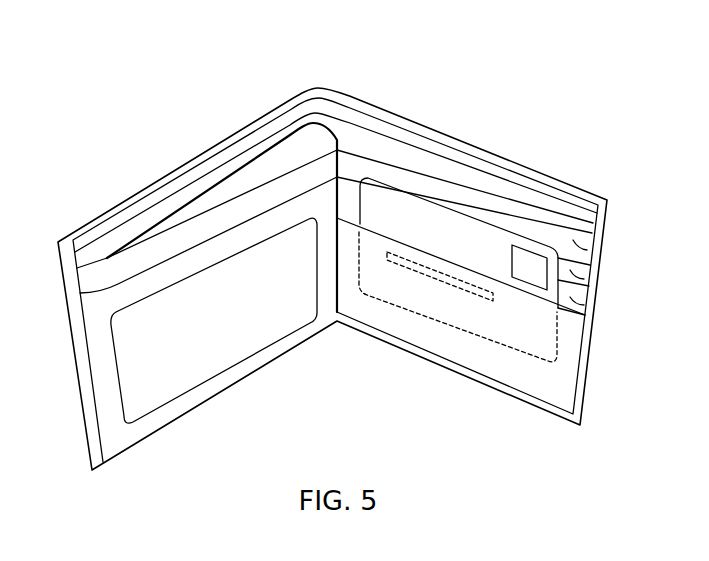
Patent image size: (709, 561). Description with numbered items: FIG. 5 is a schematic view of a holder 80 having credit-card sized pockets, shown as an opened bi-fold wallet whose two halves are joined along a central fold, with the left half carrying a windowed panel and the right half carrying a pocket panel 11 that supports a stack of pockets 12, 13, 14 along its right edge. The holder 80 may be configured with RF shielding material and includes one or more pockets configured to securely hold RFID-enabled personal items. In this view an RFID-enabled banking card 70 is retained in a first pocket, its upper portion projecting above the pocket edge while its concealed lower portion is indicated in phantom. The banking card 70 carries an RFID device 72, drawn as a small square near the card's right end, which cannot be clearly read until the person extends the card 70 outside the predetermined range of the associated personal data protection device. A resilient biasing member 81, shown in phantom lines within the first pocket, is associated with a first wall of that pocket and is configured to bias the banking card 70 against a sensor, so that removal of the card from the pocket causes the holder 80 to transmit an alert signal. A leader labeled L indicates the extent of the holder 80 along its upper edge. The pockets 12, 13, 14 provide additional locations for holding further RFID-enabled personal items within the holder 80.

The holder 80 is at (417, 83).
The length of wallet L is at (204, 157).
The pocket panel 11 is at (380, 310).
The first card pocket 12 is at (593, 307).
The second card pocket 13 is at (598, 286).
The third card pocket 14 is at (603, 256).
The banking card 70 is at (468, 232).
The RFID device 72 is at (527, 260).
The resilient biasing member 81 is at (447, 277).